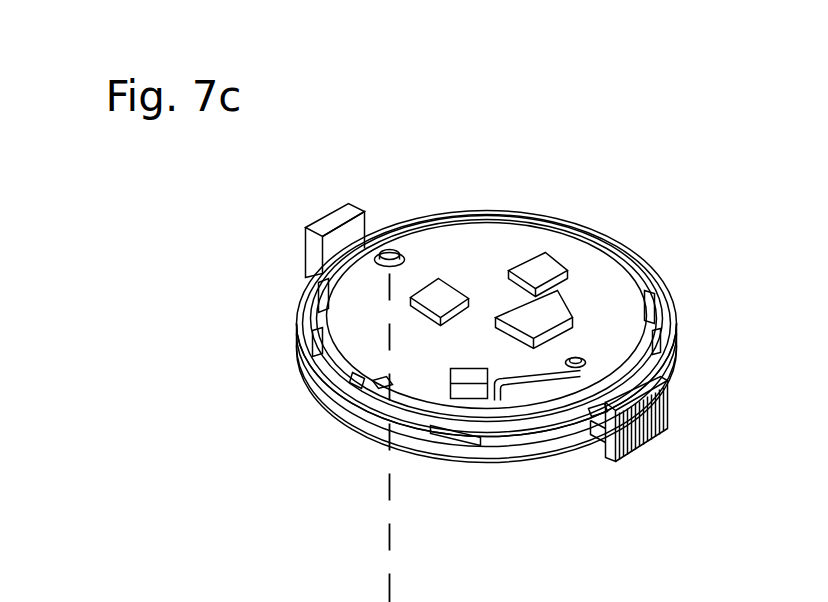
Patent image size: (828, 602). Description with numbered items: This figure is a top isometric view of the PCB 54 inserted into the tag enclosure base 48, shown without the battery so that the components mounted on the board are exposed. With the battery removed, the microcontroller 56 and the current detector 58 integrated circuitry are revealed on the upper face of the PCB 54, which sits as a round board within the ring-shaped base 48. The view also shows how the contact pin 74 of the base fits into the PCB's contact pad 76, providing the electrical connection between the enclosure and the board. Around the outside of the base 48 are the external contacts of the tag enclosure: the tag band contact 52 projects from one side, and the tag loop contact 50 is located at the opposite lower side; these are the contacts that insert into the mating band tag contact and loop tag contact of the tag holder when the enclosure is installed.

The tag enclosure base 48 is at (372, 434).
The tag loop contact 50 is at (614, 466).
The tag band contact 52 is at (303, 262).
The PCB 54 is at (487, 256).
The microcontroller 56 is at (562, 306).
The current detector 58 is at (547, 252).
The contact pin 74 is at (389, 250).
The contact pad 76 is at (410, 256).